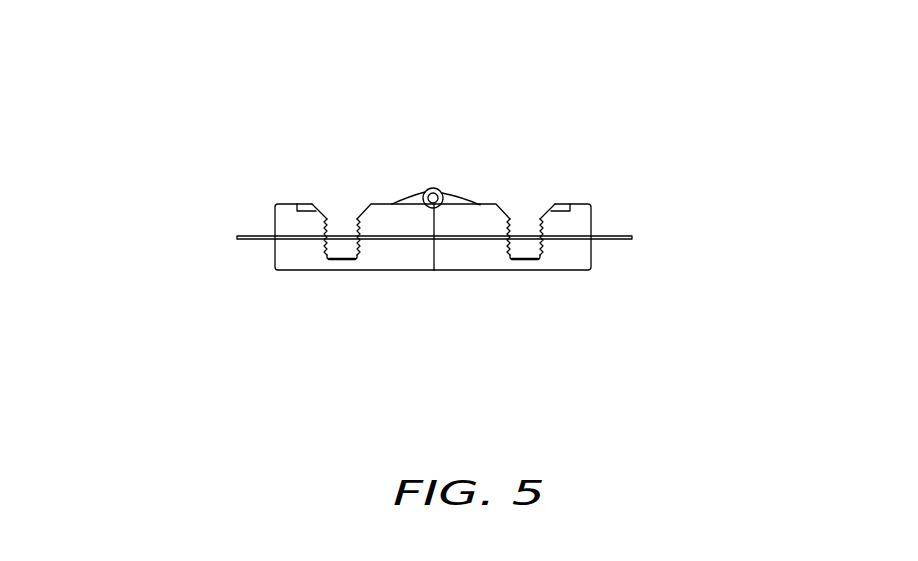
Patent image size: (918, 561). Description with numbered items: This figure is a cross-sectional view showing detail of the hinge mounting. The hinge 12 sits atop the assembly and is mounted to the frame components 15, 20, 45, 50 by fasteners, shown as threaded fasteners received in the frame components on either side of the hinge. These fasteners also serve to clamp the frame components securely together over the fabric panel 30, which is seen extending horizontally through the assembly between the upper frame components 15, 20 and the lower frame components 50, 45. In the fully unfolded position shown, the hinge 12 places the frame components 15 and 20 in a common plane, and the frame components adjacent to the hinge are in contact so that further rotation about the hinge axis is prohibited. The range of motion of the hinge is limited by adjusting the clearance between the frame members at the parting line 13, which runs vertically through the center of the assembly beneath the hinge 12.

The hinge 12 is at (442, 111).
The parting line 13 is at (438, 302).
The frame component 15 is at (307, 154).
The frame component 20 is at (591, 156).
The fabric panel 30 is at (447, 191).
The frame component 45 is at (574, 300).
The frame component 50 is at (313, 299).